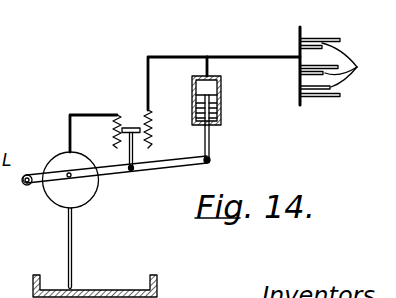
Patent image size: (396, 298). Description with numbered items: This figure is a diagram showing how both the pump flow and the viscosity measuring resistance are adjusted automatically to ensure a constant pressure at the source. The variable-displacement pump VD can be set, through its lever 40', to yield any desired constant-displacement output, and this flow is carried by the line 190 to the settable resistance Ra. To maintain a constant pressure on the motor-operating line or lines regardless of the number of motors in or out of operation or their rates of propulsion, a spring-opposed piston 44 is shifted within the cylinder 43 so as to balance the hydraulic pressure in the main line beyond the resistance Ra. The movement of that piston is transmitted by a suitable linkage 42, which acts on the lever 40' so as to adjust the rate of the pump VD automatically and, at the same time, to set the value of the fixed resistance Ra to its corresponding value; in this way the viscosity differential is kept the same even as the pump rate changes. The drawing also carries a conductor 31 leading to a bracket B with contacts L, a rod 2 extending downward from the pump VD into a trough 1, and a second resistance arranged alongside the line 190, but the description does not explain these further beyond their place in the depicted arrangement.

The trough 1 is at (31, 282).
The rod 2 is at (73, 243).
The line 190 is at (69, 139).
The resistance Ra is at (152, 121).
The conductor 31 is at (186, 56).
The cylinder 43 is at (205, 85).
The spring-opposed piston 44 is at (208, 97).
The linkage 42 is at (210, 145).
The lever 40' is at (114, 179).
The bus bar B is at (302, 31).
The contacts L is at (345, 65).
The variable-displacement pump VD is at (71, 180).